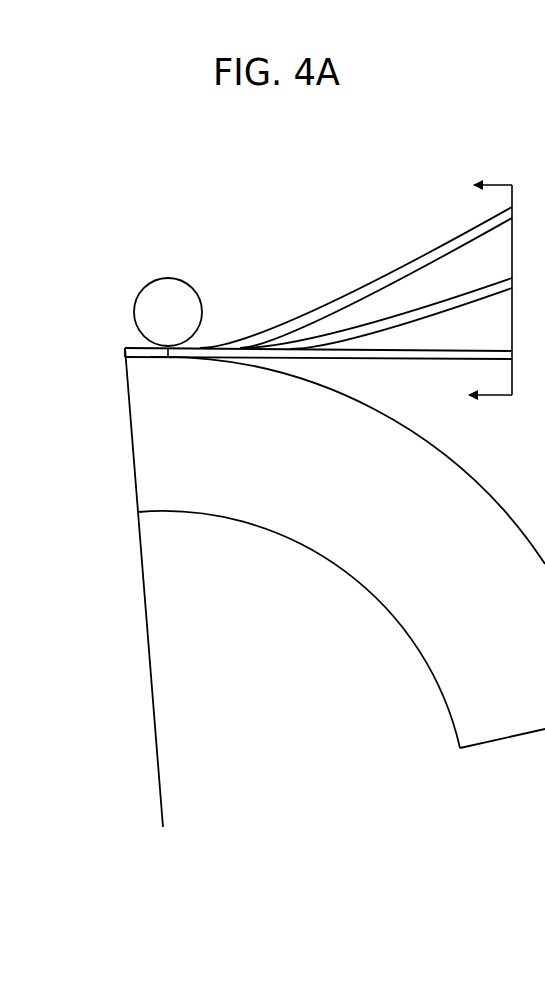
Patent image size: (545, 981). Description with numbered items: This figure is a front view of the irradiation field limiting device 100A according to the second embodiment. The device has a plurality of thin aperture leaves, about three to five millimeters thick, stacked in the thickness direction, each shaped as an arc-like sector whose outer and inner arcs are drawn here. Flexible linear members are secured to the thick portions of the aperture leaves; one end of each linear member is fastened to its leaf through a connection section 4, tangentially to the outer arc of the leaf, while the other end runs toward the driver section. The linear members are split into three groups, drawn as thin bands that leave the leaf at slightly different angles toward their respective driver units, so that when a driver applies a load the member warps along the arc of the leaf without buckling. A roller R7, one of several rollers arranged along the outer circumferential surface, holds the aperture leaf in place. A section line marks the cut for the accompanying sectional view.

The irradiation field limiting device 100A is at (238, 138).
The connection section 4 is at (125, 347).
The roller R7 is at (168, 278).